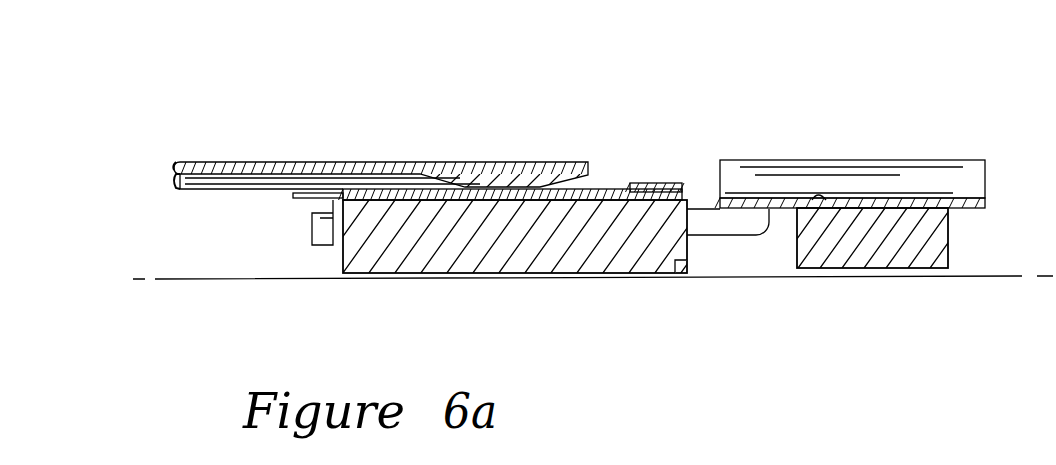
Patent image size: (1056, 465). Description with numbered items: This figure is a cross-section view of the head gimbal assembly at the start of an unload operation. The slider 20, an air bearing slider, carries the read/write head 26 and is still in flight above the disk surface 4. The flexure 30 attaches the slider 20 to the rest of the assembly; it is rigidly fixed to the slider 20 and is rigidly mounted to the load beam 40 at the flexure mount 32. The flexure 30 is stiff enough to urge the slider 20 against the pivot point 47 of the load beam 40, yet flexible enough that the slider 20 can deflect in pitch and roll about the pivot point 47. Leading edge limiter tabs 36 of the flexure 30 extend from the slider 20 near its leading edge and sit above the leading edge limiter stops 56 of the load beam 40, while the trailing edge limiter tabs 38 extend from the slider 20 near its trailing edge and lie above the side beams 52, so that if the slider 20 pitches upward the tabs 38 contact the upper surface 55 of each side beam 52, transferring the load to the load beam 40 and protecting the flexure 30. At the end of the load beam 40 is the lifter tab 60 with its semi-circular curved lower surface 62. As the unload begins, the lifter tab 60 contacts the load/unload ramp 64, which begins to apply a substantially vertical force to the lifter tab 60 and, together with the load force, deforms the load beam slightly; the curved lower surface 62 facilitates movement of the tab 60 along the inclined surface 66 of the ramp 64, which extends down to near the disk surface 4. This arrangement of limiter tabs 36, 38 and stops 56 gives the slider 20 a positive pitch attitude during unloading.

The disk surface 4 is at (168, 284).
The slider 20 is at (589, 279).
The read/write head 26 is at (683, 272).
The flexure 30 is at (242, 194).
The flexure mount 32 is at (210, 186).
The leading edge limiter tabs 36 is at (289, 196).
The trailing edge limiter tabs 38 is at (642, 188).
The load beam 40 is at (368, 158).
The pivot point 47 is at (512, 185).
The side beams 52 is at (740, 227).
The upper surface 55 is at (705, 203).
The leading edge limiter stops 56 is at (314, 232).
The lifter tab 60 is at (847, 158).
The curved lower surface 62 is at (972, 207).
The load/unload ramp 64 is at (928, 258).
The inclined surface 66 is at (822, 198).